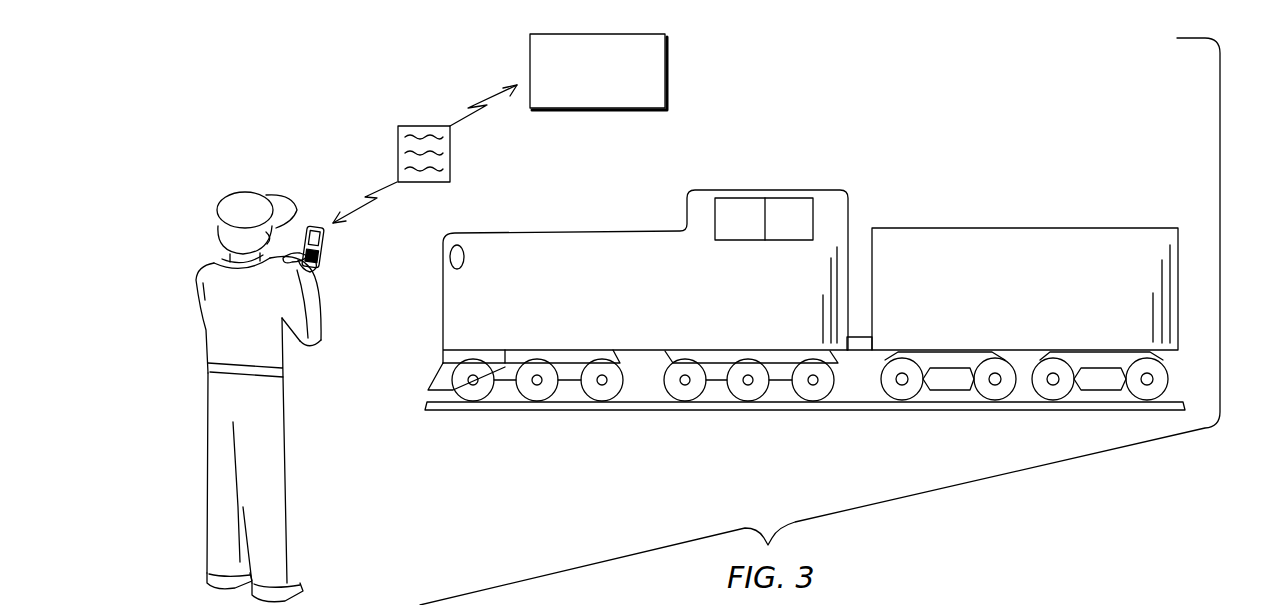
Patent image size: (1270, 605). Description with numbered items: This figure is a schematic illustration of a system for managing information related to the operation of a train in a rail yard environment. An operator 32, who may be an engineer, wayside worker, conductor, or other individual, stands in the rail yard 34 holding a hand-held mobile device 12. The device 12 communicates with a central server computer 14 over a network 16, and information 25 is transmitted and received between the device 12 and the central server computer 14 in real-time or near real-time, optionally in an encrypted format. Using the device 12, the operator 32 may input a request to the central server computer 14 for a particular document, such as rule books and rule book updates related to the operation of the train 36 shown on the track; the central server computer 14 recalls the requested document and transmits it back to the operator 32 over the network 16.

The hand-held mobile device 12 is at (327, 243).
The central server computer 14 is at (668, 65).
The network 16 is at (505, 85).
The information 25 is at (450, 148).
The operator 32 is at (258, 397).
The rail yard 34 is at (275, 121).
The train 36 is at (805, 178).